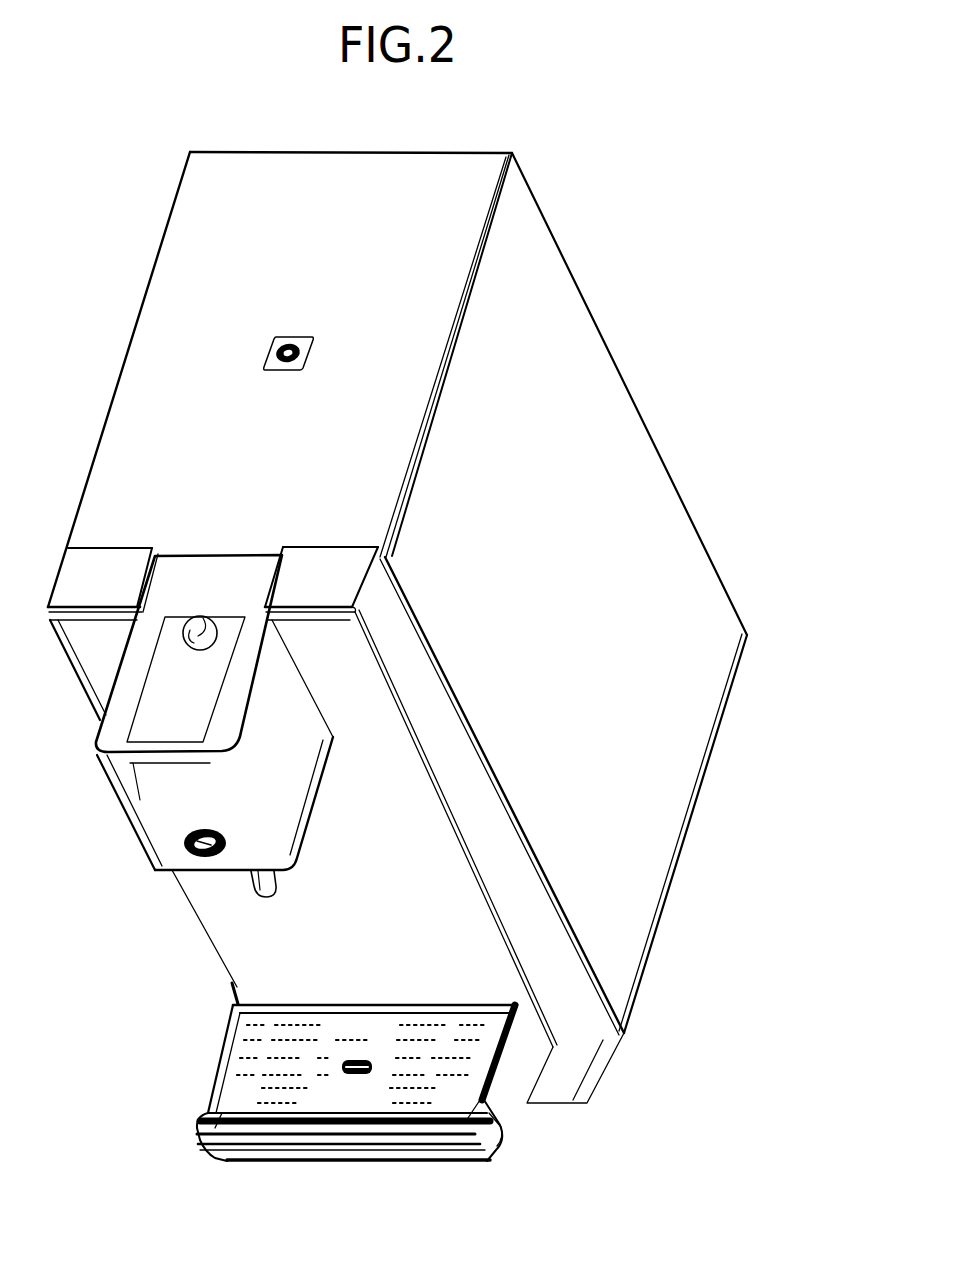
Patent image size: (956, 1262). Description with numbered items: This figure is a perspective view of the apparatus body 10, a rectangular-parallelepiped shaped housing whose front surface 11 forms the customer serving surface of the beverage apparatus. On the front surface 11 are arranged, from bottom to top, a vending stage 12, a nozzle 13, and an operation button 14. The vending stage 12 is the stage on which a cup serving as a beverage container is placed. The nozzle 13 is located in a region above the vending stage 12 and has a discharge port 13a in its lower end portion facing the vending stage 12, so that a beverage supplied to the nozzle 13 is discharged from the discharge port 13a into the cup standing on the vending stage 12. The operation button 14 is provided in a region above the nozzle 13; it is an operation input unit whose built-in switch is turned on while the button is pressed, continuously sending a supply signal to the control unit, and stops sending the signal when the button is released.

The apparatus body 10 is at (551, 232).
The front surface 11 is at (372, 765).
The vending stage 12 is at (250, 1058).
The nozzle 13 is at (250, 883).
The discharge port 13a is at (269, 889).
The operation button 14 is at (183, 850).